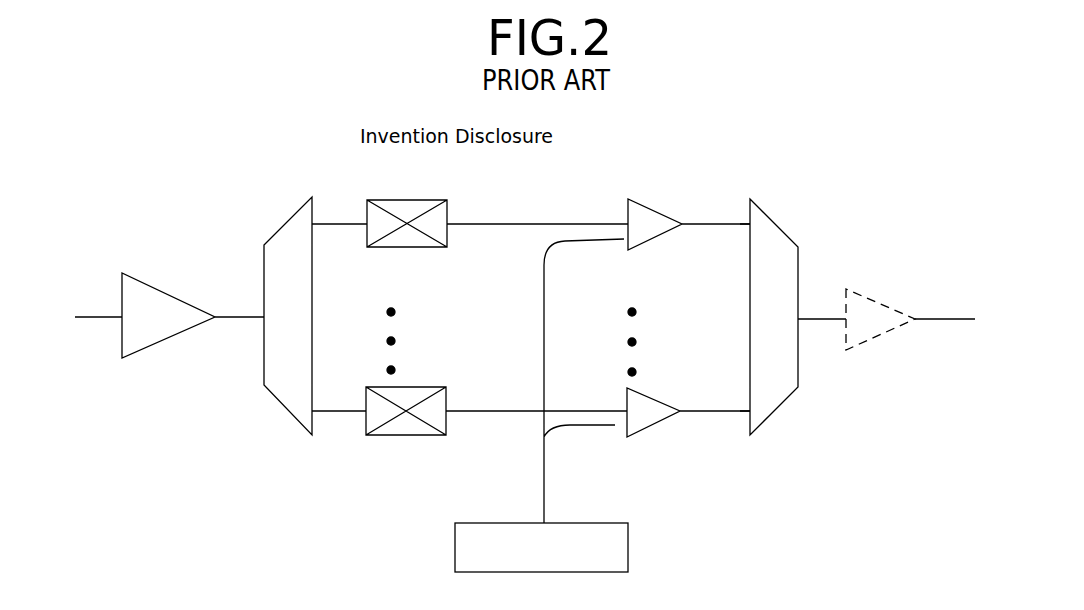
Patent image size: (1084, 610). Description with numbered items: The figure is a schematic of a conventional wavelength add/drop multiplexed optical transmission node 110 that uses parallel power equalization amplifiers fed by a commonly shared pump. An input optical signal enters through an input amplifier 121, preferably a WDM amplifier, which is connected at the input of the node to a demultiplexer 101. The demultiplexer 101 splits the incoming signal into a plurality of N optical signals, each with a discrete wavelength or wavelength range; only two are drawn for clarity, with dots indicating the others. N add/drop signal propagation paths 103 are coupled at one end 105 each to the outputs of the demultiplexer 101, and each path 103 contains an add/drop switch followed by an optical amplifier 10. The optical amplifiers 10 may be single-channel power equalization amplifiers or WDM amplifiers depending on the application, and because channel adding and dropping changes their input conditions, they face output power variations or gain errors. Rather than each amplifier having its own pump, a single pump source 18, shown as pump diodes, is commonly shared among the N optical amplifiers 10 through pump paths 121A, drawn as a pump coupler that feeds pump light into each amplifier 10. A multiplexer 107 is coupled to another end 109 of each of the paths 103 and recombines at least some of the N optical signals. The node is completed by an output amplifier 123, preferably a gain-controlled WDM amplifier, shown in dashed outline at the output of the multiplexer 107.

The optical amplifier 10 is at (635, 213).
The pump source 18 is at (628, 558).
The demultiplexer 101 is at (277, 231).
The add/drop signal propagation path 103 is at (328, 223).
The one end of add/drop signal propagation path 105 is at (312, 197).
The multiplexer 107 is at (792, 258).
The another end of add/drop signal propagation path 109 is at (732, 223).
The wavelength add/drop multiplexed optical transmission node 110 is at (673, 183).
The input amplifier 121 is at (160, 341).
The pump path 121A is at (544, 447).
The output amplifier 123 is at (887, 337).